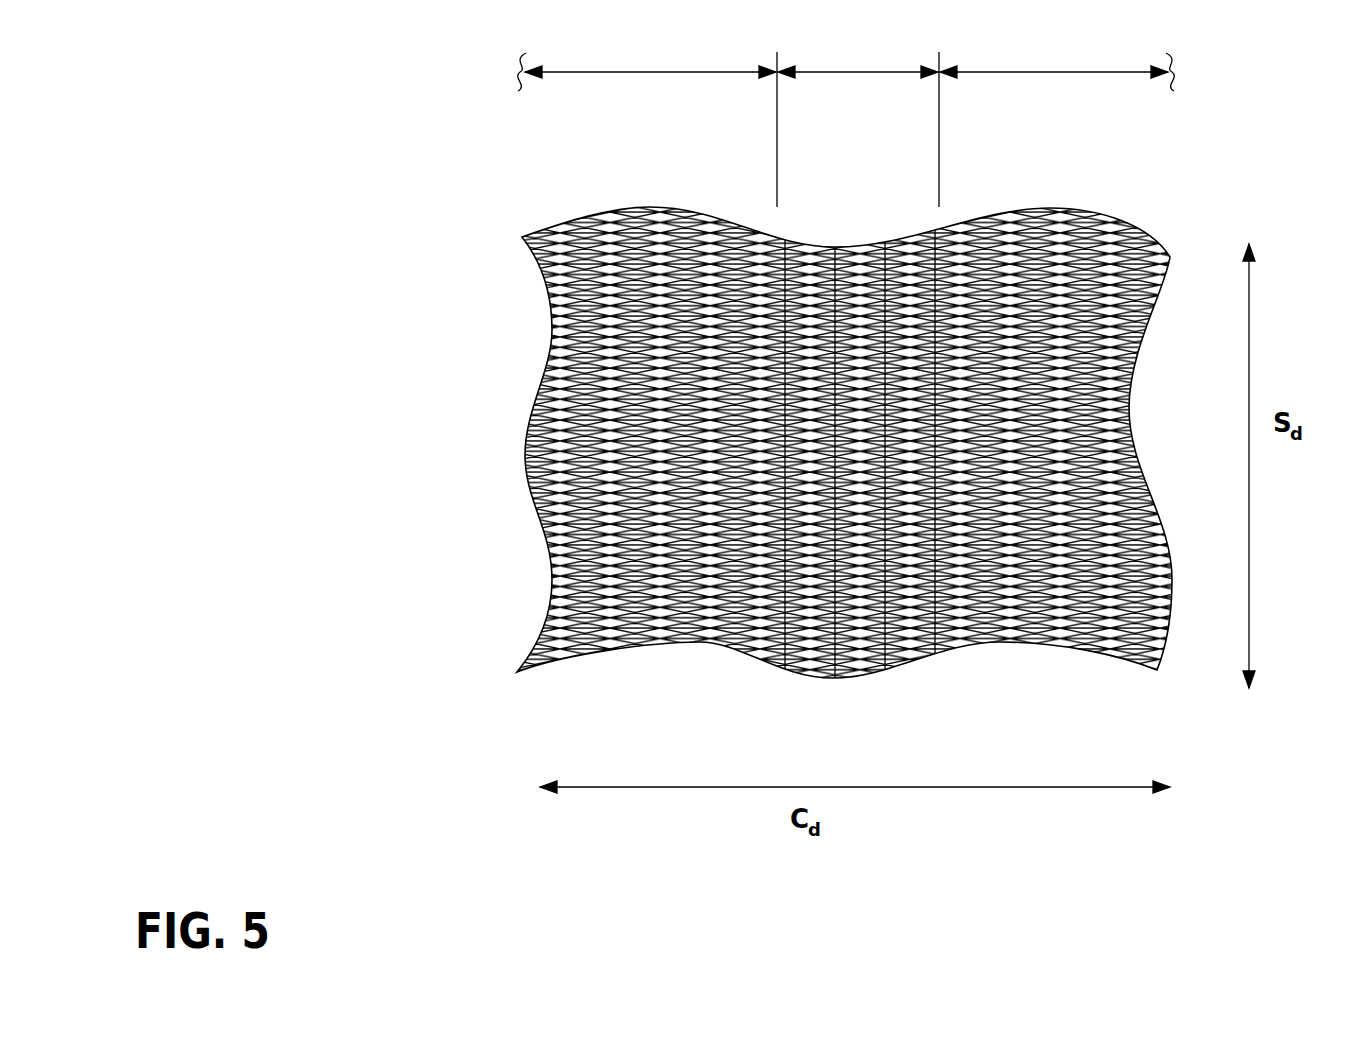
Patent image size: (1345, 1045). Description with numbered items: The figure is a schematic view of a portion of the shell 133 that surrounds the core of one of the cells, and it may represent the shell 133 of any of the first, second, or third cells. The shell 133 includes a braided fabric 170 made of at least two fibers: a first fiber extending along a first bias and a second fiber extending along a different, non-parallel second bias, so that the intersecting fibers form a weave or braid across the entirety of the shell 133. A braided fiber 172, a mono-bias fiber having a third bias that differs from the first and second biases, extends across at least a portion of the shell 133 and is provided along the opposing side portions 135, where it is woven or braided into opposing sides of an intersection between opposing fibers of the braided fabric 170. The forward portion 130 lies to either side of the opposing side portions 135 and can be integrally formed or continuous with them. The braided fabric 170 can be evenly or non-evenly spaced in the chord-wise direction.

The forward portion 130 is at (846, 122).
The opposing side portions 135 is at (858, 58).
The shell 133 is at (1332, 56).
The braided fabric 170 is at (648, 268).
The braided fiber 172 is at (940, 278).